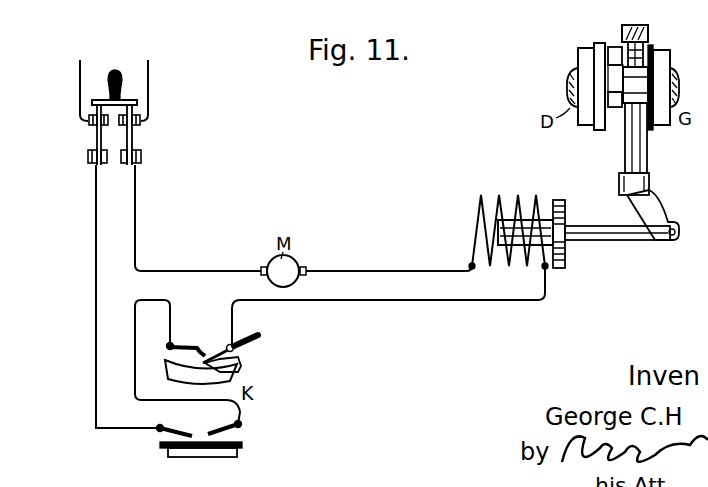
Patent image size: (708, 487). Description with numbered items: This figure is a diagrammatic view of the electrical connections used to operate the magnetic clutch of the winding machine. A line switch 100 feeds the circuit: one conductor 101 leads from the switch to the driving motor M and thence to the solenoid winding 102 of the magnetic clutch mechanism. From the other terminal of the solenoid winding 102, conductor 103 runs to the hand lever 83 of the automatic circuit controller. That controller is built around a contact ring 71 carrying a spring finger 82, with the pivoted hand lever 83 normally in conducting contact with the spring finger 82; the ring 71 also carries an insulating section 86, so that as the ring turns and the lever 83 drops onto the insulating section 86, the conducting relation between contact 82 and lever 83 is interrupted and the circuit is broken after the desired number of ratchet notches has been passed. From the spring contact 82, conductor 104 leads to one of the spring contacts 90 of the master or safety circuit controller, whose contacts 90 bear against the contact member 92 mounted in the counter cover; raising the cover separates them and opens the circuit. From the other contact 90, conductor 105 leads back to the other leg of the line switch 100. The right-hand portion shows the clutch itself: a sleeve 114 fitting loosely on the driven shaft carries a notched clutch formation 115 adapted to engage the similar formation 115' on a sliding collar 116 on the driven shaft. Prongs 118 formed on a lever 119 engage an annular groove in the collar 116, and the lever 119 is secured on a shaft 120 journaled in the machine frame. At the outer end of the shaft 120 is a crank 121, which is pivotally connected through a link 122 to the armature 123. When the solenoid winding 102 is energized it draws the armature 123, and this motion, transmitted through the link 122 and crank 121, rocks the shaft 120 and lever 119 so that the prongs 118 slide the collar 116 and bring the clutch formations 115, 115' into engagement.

The contact ring 71 is at (172, 366).
The spring finger 82 is at (172, 345).
The hand lever 83 is at (206, 360).
The insulating section 86 is at (241, 365).
The spring contacts 90 is at (222, 433).
The contact member 92 is at (238, 442).
The line switch 100 is at (127, 112).
The conductor 101 is at (135, 219).
The solenoid winding 102 is at (515, 218).
The conductor 103 is at (378, 300).
The conductor 104 is at (135, 310).
The conductor 105 is at (95, 320).
The sleeve 114 is at (583, 58).
The notched clutch formation 115 is at (580, 74).
The clutch formation 115' is at (608, 56).
The sliding collar 116 is at (666, 55).
The prongs 118 is at (654, 48).
The lever 119 is at (635, 27).
The shaft 120 is at (648, 158).
The crank 121 is at (659, 207).
The link 122 is at (606, 241).
The armature 123 is at (567, 258).